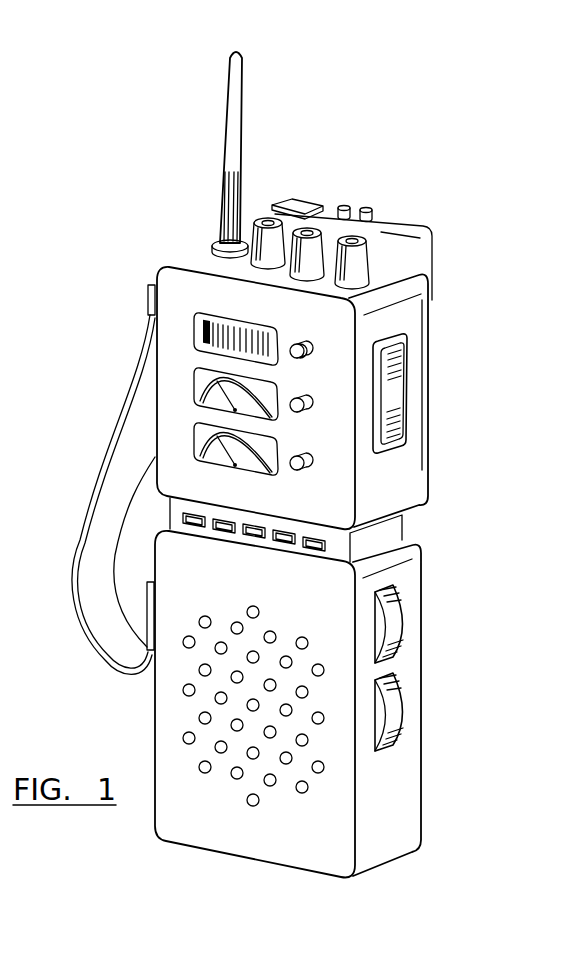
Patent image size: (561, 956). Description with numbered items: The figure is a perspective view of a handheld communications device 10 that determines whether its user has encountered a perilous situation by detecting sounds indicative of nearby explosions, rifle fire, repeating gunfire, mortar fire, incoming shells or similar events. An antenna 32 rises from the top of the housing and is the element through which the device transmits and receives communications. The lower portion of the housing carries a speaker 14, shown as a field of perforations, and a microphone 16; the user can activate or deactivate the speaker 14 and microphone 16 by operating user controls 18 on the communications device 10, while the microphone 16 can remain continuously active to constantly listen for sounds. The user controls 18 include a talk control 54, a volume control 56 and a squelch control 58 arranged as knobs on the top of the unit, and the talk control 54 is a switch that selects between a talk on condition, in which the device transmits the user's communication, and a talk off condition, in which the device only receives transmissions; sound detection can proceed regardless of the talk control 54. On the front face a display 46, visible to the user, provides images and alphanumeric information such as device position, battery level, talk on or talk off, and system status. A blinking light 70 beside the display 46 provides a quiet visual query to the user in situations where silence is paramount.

The communications device 10 is at (478, 229).
The speaker 14 is at (224, 713).
The microphone 16 is at (220, 772).
The user controls 18 is at (298, 221).
The antenna 32 is at (237, 114).
The display 46 is at (181, 376).
The talk control 54 is at (355, 262).
The volume control 56 is at (313, 250).
The squelch control 58 is at (272, 237).
The blinking light 70 is at (314, 352).